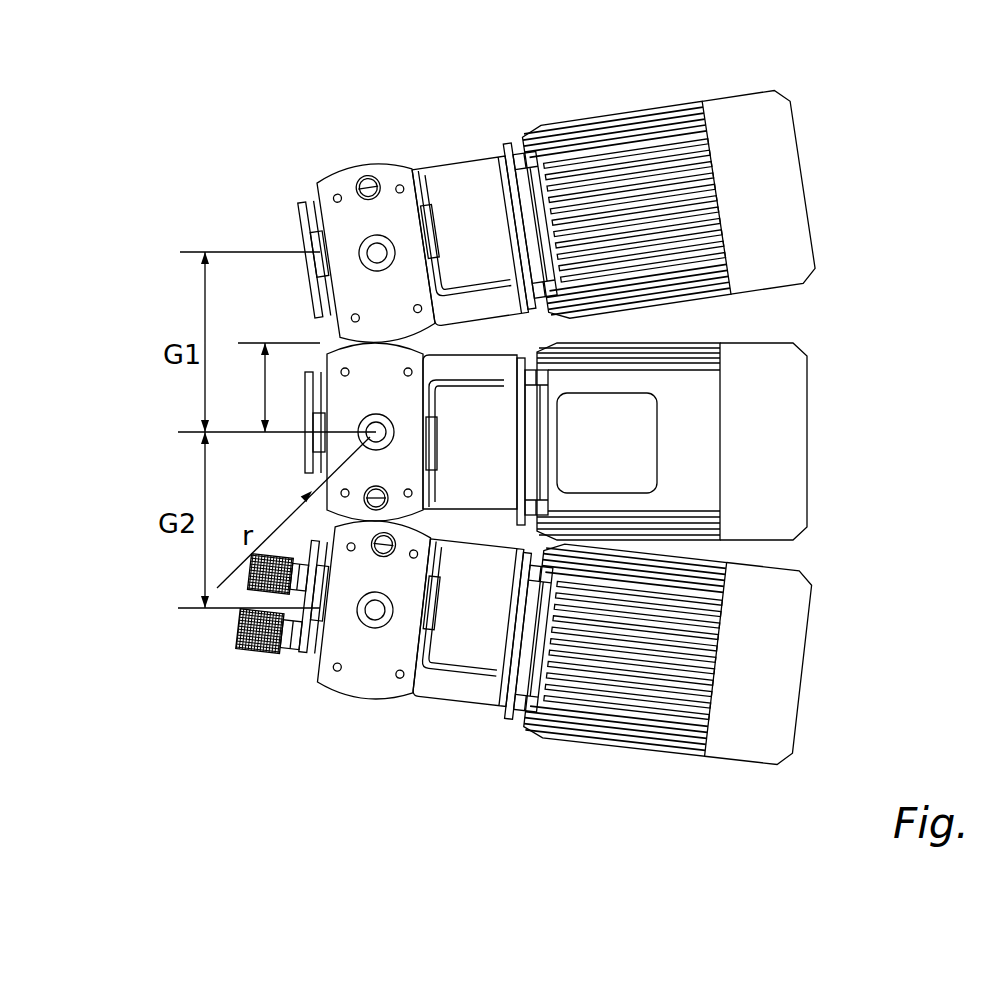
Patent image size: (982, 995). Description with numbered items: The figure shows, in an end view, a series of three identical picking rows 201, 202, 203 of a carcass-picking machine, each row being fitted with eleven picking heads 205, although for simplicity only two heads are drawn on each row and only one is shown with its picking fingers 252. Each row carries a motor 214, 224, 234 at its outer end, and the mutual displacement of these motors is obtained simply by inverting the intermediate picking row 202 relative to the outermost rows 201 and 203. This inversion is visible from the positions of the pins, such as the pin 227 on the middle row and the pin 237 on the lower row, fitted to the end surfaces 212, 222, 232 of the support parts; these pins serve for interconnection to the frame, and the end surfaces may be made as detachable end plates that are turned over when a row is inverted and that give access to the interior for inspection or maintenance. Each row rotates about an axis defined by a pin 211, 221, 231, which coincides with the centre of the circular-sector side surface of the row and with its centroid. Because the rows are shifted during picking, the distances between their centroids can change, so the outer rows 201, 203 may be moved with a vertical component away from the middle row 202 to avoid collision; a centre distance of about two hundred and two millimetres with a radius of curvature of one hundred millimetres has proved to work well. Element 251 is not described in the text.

The picking row 201 is at (318, 172).
The picking row 202 is at (330, 352).
The picking row 203 is at (377, 700).
The picking head 205 is at (300, 243).
The pin 211 is at (380, 250).
The end surface 212 is at (348, 225).
The motor 214 is at (772, 178).
The pin 221 is at (368, 437).
The end surface 222 is at (348, 400).
The motor 224 is at (780, 425).
The pin 227 is at (313, 495).
The pin 231 is at (375, 628).
The end surface 232 is at (417, 663).
The motor 234 is at (785, 645).
The pin 237 is at (260, 588).
The nut 251 is at (300, 653).
The picking fingers 252 is at (240, 653).